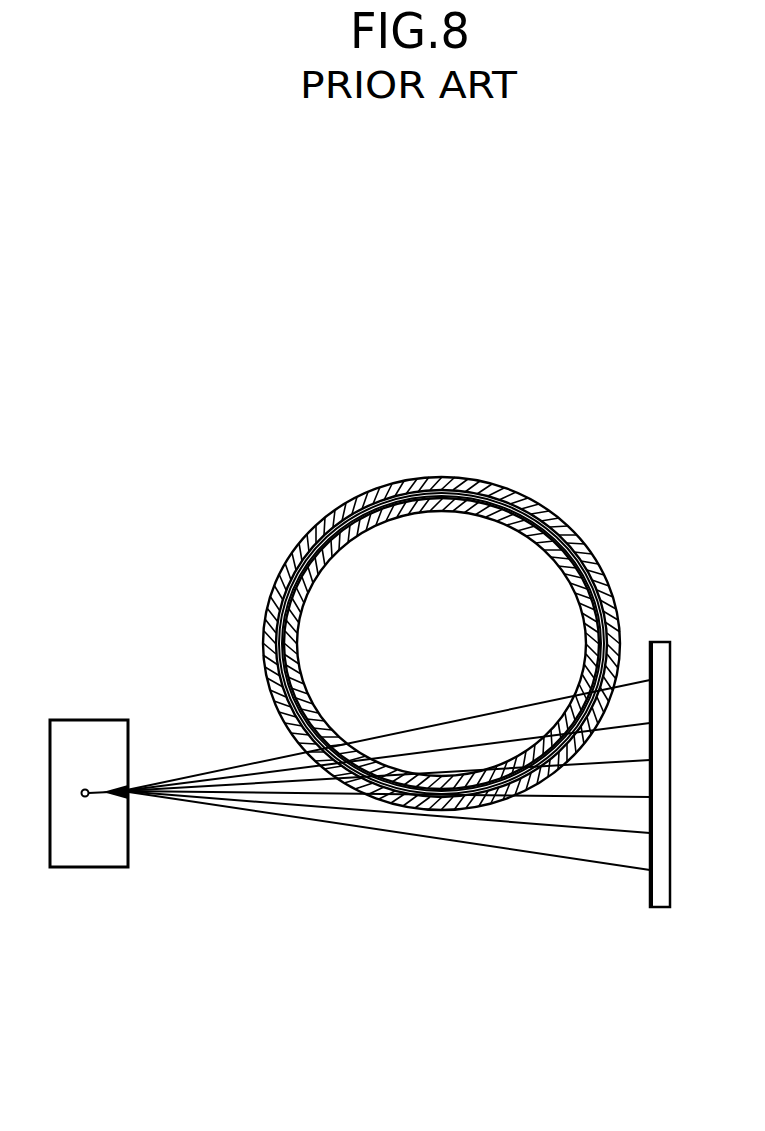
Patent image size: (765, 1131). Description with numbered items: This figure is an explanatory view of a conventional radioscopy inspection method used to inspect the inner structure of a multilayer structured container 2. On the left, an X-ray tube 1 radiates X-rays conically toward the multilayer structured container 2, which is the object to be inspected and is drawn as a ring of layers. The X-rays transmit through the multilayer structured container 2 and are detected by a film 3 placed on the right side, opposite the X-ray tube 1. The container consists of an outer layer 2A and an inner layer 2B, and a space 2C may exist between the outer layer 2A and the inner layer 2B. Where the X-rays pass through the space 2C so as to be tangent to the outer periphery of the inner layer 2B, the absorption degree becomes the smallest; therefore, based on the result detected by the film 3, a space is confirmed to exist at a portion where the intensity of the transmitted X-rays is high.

The X-ray tube 1 is at (85, 867).
The multilayer structured container 2 is at (487, 588).
The outer layer 2A is at (502, 488).
The inner layer 2B is at (600, 567).
The space 2C is at (563, 523).
The film 3 is at (672, 640).